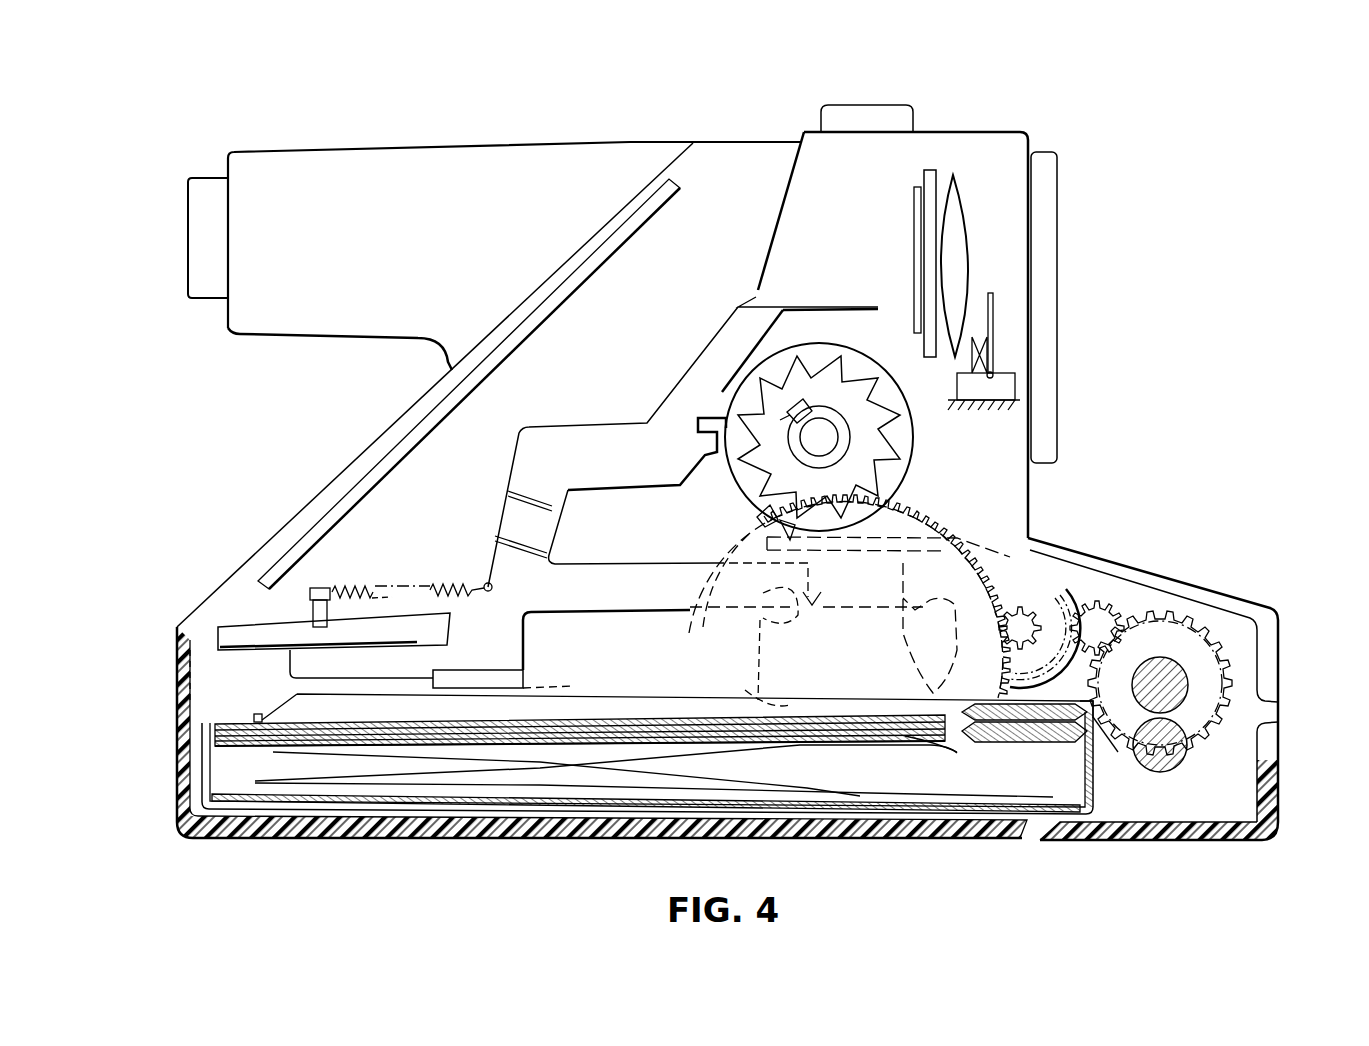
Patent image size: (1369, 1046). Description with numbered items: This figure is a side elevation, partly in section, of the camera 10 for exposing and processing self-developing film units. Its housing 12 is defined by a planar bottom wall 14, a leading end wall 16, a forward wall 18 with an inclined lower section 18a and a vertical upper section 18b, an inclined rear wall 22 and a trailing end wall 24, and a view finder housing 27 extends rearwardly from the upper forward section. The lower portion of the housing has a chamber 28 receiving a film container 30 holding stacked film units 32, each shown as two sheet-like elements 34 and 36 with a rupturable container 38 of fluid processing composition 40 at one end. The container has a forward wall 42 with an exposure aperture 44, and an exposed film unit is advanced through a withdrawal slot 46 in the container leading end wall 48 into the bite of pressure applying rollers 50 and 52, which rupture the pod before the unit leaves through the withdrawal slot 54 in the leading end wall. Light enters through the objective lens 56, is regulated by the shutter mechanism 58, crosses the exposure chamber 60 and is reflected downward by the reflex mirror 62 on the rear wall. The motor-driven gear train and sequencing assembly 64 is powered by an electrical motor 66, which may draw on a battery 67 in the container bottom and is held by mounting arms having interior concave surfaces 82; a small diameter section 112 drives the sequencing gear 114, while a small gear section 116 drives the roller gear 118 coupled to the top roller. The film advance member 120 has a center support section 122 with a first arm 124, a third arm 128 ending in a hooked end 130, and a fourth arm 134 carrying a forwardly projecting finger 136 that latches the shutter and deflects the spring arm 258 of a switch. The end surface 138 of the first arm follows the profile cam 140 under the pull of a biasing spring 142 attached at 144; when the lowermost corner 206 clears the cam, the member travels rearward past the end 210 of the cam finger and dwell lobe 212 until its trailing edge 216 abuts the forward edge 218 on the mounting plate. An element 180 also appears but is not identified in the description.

The camera 10 is at (1167, 172).
The housing 12 is at (797, 128).
The planar bottom wall 14 is at (510, 838).
The leading end wall 16 is at (1280, 648).
The forward wall 18 is at (1036, 528).
The inclined lower section 18a is at (1172, 578).
The vertical upper section 18b is at (1030, 498).
The inclined rear wall 22 is at (325, 487).
The trailing end wall 24 is at (176, 718).
The view finder housing 27 is at (428, 160).
The chamber 28 is at (190, 792).
The film container 30 is at (198, 727).
The self-developing film units 32 is at (242, 747).
The sheet-like element 34 is at (592, 722).
The sheet-like element 36 is at (625, 718).
The rupturable container 38 is at (1008, 742).
The fluid processing composition 40 is at (1044, 738).
The forward wall 42 is at (983, 704).
The exposure aperture 44 is at (942, 702).
The film unit withdrawal slot 46 is at (1111, 745).
The leading end wall 48 is at (1100, 788).
The pressure applying roller 50 is at (1173, 673).
The pressure applying roller 52 is at (1185, 755).
The withdrawal slot 54 is at (1280, 710).
The objective lens 56 is at (967, 213).
The shutter mechanism 58 is at (913, 218).
The exposure chamber 60 is at (583, 307).
The reflex mirror 62 is at (432, 428).
The motor-driven gear train and camera sequencing assembly 64 is at (949, 516).
The electrical motor 66 is at (1073, 583).
The electrical battery 67 is at (873, 797).
The interior concave surfaces 82 is at (1004, 302).
The small diameter section 112 is at (1017, 613).
The sequencing gear 114 is at (898, 522).
The small diameter gear section 116 is at (1110, 614).
The roller gear 118 is at (1157, 641).
The film advance member 120 is at (566, 550).
The center support section 122 is at (493, 607).
The first arm 124 is at (638, 570).
The third arm 128 is at (284, 693).
The hooked end 130 is at (233, 720).
The fourth arm 134 is at (613, 427).
The forwardly projecting finger 136 is at (818, 307).
The end surface 138 is at (805, 570).
The profile cam 140 is at (760, 663).
The biasing spring 142 is at (357, 585).
The spring attachment point 144 is at (486, 585).
The pawl 180 is at (775, 513).
The lowermost corner 206 is at (823, 592).
The end of finger portion 210 is at (760, 612).
The dwell lobe 212 is at (760, 678).
The trailing edge 216 is at (447, 636).
The forward edge 218 is at (445, 630).
The spring arm 258 is at (993, 320).